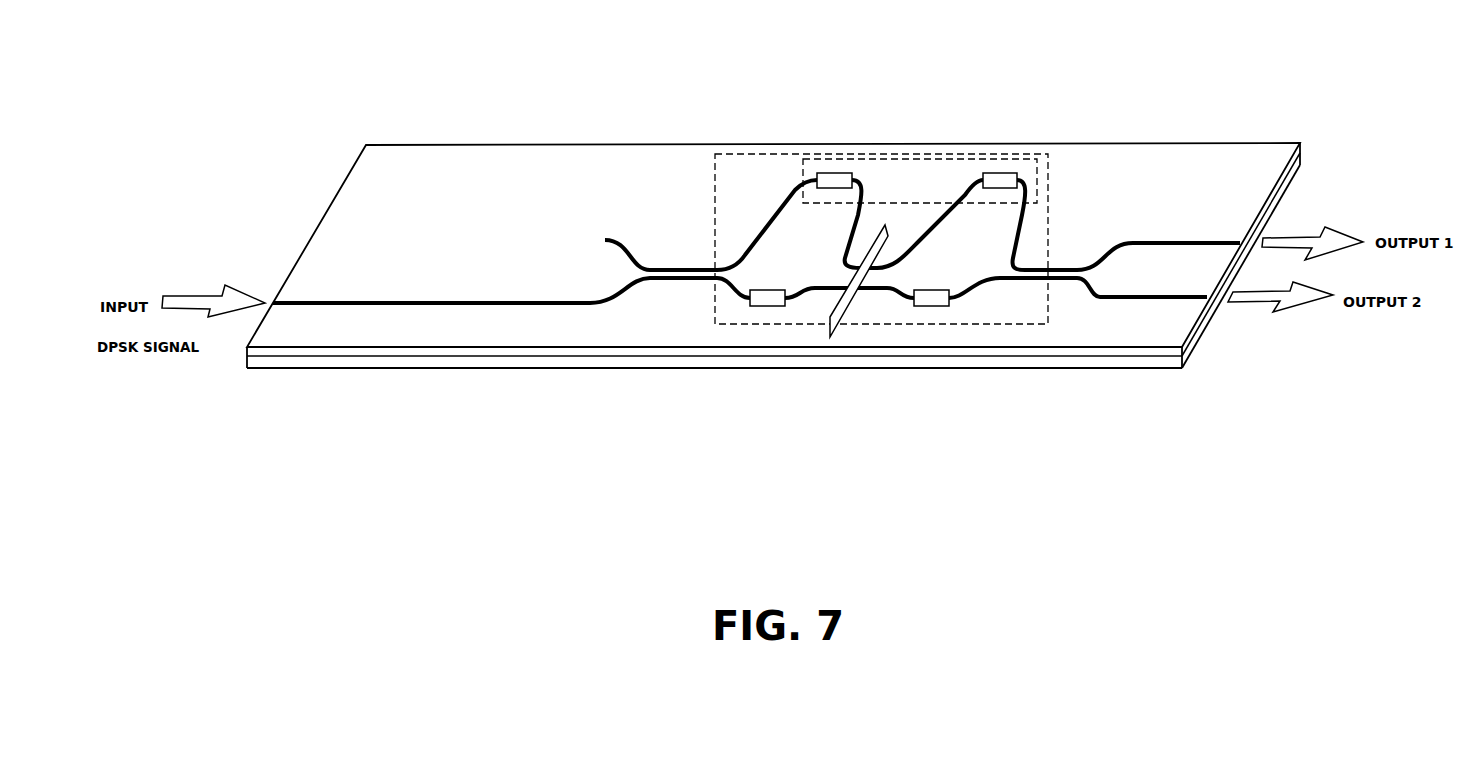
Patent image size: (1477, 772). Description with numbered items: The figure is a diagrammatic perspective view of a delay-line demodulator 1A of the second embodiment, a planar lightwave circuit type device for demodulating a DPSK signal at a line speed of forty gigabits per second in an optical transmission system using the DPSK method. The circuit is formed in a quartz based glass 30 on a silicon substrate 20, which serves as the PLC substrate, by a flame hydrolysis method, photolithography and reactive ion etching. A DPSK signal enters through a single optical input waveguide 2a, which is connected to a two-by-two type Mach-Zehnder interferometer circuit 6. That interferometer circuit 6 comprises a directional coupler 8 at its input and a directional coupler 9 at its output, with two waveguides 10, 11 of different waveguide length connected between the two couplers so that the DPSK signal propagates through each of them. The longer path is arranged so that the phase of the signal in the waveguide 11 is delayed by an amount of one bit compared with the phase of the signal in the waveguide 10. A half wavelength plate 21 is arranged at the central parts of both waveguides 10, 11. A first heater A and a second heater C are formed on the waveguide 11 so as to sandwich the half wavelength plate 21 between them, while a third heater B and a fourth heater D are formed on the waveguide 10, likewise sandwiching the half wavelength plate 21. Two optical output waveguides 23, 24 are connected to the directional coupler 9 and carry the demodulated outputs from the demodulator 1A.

The delay-line demodulator 1A is at (549, 96).
The optical input waveguide 2a is at (472, 301).
The Mach-Zehnder interferometer circuit 6 is at (766, 214).
The directional coupler 8 is at (676, 268).
The directional coupler 9 is at (1062, 268).
The waveguide 10 is at (735, 293).
The waveguide 11 is at (733, 258).
The silicon substrate 20 is at (988, 361).
The half wavelength plate 21 is at (885, 172).
The optical output waveguide 23 is at (1185, 243).
The optical output waveguide 24 is at (1157, 296).
The quartz based glass 30 is at (1062, 350).
The first heater A is at (834, 195).
The third heater B is at (767, 285).
The second heater C is at (1000, 195).
The fourth heater D is at (931, 285).